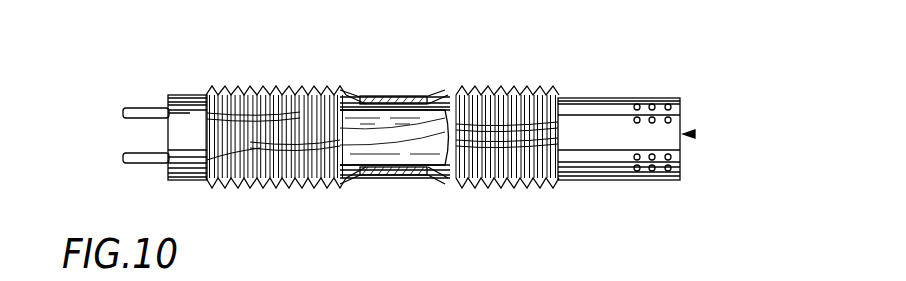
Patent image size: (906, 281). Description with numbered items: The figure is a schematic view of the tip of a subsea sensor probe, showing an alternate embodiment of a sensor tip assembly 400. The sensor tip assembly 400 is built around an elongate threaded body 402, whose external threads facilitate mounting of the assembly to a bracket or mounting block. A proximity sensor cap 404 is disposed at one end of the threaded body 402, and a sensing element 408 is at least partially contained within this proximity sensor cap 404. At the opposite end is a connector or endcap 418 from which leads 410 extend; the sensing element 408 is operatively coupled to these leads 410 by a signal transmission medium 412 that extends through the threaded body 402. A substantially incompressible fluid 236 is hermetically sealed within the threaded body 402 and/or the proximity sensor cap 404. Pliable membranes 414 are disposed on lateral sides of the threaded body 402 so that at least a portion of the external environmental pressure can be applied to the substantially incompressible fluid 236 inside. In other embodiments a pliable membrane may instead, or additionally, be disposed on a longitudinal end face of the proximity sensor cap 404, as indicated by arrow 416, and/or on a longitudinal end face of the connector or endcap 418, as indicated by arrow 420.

The sensor tip assembly 400 is at (614, 66).
The elongate threaded body 402 is at (259, 92).
The proximity sensor cap 404 is at (598, 163).
The sensing element 408 is at (650, 180).
The leads 410 is at (168, 106).
The signal transmission medium 412 is at (440, 180).
The pliable membranes 414 is at (399, 96).
The arrow 416 is at (692, 134).
The connector or endcap 418 is at (169, 98).
The arrow 420 is at (168, 134).
The substantially incompressible fluid 236 is at (362, 163).